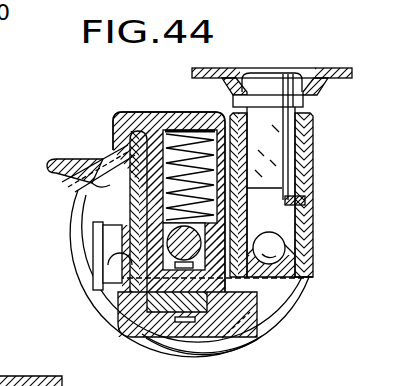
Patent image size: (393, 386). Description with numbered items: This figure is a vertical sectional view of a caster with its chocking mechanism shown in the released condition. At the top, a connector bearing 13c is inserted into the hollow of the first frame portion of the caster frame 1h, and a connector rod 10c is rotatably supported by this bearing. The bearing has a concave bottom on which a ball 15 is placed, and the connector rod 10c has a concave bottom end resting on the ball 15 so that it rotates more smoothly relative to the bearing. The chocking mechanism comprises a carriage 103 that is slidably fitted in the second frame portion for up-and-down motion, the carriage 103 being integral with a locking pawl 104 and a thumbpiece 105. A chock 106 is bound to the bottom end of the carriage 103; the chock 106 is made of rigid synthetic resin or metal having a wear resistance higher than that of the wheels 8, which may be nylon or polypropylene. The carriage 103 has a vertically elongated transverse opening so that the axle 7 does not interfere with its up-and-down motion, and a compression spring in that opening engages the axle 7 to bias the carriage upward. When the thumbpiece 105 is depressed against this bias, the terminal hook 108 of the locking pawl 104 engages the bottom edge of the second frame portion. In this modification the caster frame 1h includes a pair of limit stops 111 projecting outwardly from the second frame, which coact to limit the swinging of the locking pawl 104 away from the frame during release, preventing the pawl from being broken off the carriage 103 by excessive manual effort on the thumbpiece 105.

The carriage 103 is at (150, 120).
The thumbpiece 105 is at (68, 160).
The locking pawl 104 is at (110, 190).
The limit stops 111 is at (100, 253).
The terminal hook 108 is at (100, 283).
The wheels 8 is at (97, 310).
The chock 106 is at (223, 327).
The axle 7 is at (258, 298).
The connector bearing 13c is at (288, 282).
The caster frame 1h is at (316, 268).
The ball 15 is at (277, 247).
The connector rod 10c is at (270, 145).